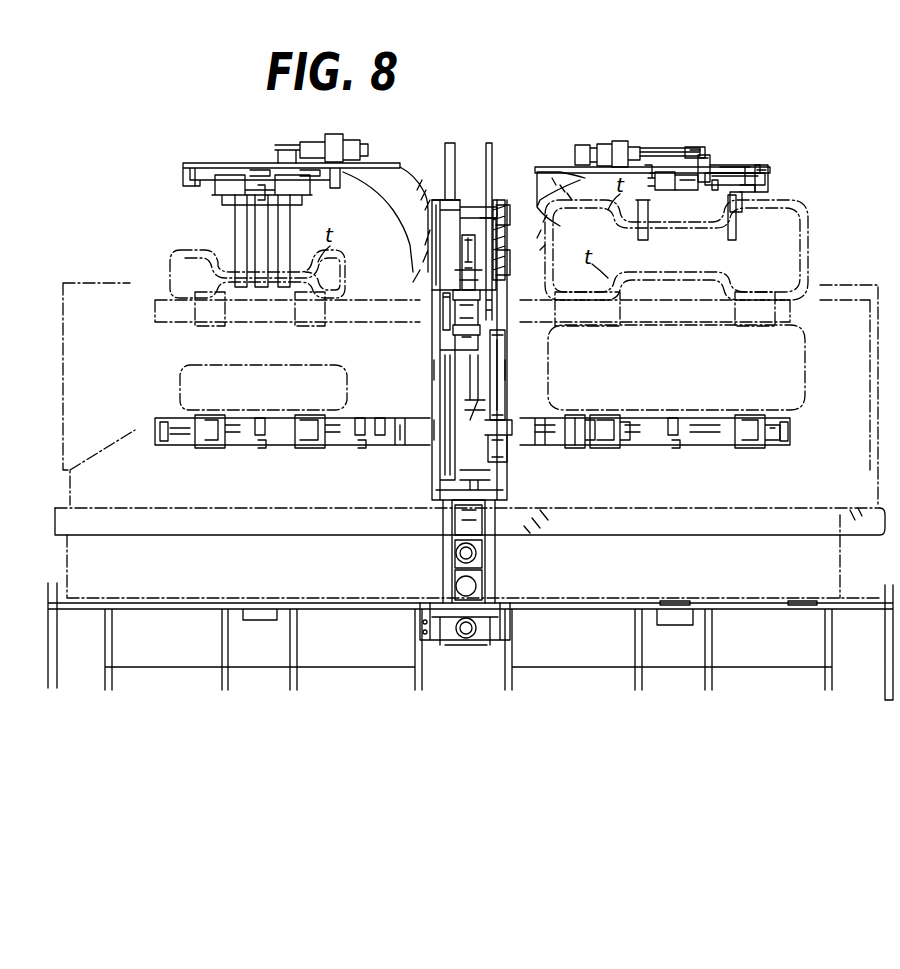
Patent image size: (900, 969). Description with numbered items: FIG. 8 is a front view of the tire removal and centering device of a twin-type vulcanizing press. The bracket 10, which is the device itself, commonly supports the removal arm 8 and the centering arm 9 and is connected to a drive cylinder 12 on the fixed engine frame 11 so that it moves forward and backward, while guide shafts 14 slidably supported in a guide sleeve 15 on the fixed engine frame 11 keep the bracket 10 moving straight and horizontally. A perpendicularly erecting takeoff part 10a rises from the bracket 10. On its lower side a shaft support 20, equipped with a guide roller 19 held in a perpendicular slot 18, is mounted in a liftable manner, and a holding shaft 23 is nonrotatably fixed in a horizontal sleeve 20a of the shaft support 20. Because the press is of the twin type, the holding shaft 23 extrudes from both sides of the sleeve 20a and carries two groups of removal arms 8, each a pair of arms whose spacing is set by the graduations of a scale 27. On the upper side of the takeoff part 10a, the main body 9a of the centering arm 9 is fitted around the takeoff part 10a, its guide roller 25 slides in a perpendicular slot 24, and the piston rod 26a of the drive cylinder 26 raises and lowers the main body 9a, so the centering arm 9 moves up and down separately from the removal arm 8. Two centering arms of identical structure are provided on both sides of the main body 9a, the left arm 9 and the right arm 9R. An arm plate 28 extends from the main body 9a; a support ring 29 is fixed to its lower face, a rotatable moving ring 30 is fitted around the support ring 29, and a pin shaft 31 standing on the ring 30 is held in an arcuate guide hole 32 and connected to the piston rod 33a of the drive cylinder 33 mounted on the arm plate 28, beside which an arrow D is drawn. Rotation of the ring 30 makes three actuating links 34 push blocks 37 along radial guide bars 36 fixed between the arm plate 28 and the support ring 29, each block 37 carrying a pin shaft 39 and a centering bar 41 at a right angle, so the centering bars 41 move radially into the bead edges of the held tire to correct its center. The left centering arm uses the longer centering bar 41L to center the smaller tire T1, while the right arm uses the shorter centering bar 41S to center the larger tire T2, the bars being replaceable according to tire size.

The removal arm 8 is at (290, 446).
The centering arm 9 is at (248, 163).
The tire carrier arm (right) 9R is at (656, 145).
The main body 9a is at (497, 250).
The bracket 10 is at (445, 298).
The takeoff part 10a is at (445, 162).
The fixed engine frame 11 is at (520, 604).
The drive cylinder 12 is at (450, 583).
The guide shafts 14 is at (476, 556).
The guide sleeve 15 is at (456, 553).
The slot 18 is at (492, 410).
The guide roller 19 is at (500, 446).
The shaft support 20 is at (435, 378).
The horizontal sleeve 20a is at (410, 445).
The holding shaft 23 is at (365, 440).
The slot 24 is at (453, 150).
The guide roller 25 is at (465, 230).
The drive cylinder 26 is at (455, 338).
The piston rod 26a is at (458, 275).
The scale 27 is at (303, 448).
The arm plate 28 is at (555, 167).
The support ring 29 is at (680, 180).
The rotatable moving ring 30 is at (698, 185).
The pin shaft 31 is at (708, 158).
The arcuate guide hole 32 is at (720, 176).
The drive cylinder 33 is at (632, 140).
The piston rod 33a is at (673, 147).
The actuating links 34 is at (752, 170).
The guide bars 36 is at (720, 192).
The block 37 is at (745, 192).
The pin shafts 39 is at (770, 166).
The centering bars 41 is at (735, 212).
The longer centering bar 41L is at (285, 250).
The shorter centering bar 41S is at (643, 230).
The direction D is at (703, 133).
The tire of smaller size T1 is at (185, 272).
The tire of larger size T2 is at (805, 280).